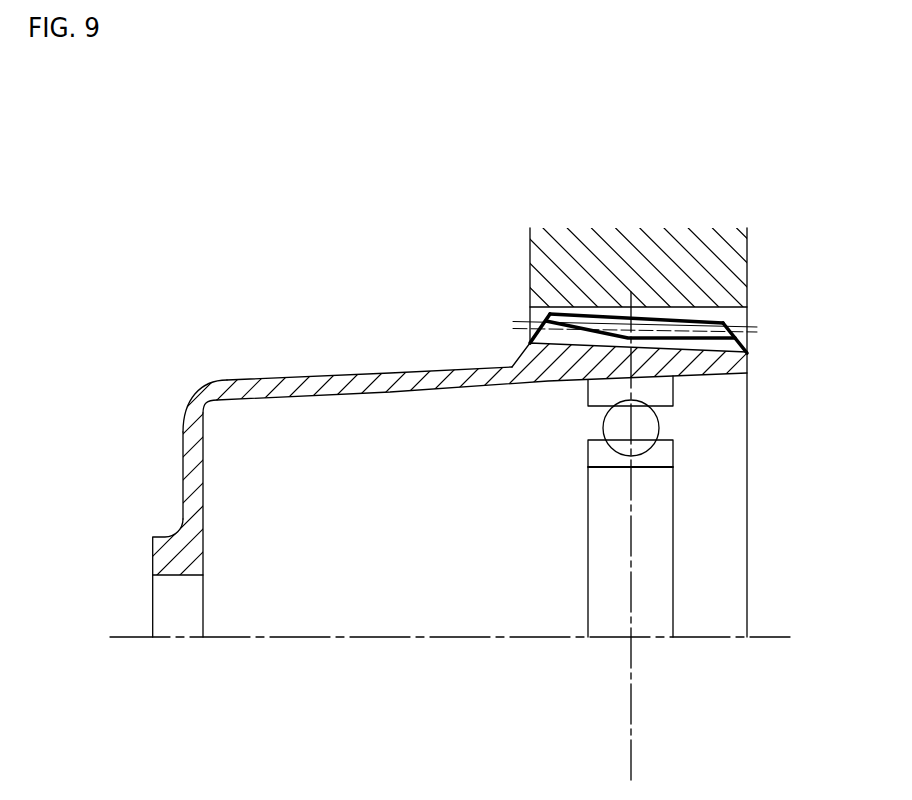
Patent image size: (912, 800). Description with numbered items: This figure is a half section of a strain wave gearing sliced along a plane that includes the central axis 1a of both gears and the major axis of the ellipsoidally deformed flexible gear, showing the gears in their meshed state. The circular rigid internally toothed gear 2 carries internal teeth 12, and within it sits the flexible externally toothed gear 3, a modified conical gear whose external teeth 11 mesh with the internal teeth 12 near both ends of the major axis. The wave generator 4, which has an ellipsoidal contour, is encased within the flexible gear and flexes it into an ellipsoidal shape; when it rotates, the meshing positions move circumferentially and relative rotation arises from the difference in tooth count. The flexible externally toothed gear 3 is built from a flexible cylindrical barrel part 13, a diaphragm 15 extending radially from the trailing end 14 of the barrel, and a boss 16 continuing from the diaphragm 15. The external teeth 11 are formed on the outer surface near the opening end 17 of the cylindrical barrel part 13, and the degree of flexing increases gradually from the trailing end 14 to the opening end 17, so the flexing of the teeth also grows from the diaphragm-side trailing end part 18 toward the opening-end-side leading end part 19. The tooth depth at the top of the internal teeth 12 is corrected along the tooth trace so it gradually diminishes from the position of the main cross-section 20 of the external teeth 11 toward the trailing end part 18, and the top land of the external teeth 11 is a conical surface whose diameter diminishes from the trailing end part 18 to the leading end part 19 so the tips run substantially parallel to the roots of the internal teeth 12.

The central axis 1a is at (128, 638).
The rigid internally toothed gear 2 is at (523, 262).
The flexible externally toothed gear 3 is at (351, 333).
The wave generator 4 is at (684, 552).
The external teeth 11 is at (694, 318).
The internal teeth 12 is at (588, 337).
The cylindrical barrel part 13 is at (313, 397).
The trailing end 14 is at (200, 388).
The diaphragm 15 is at (190, 488).
The boss 16 is at (157, 558).
The opening end 17 is at (747, 449).
The trailing end part 18 is at (545, 318).
The leading end part 19 is at (727, 323).
The main cross-section 20 is at (633, 360).